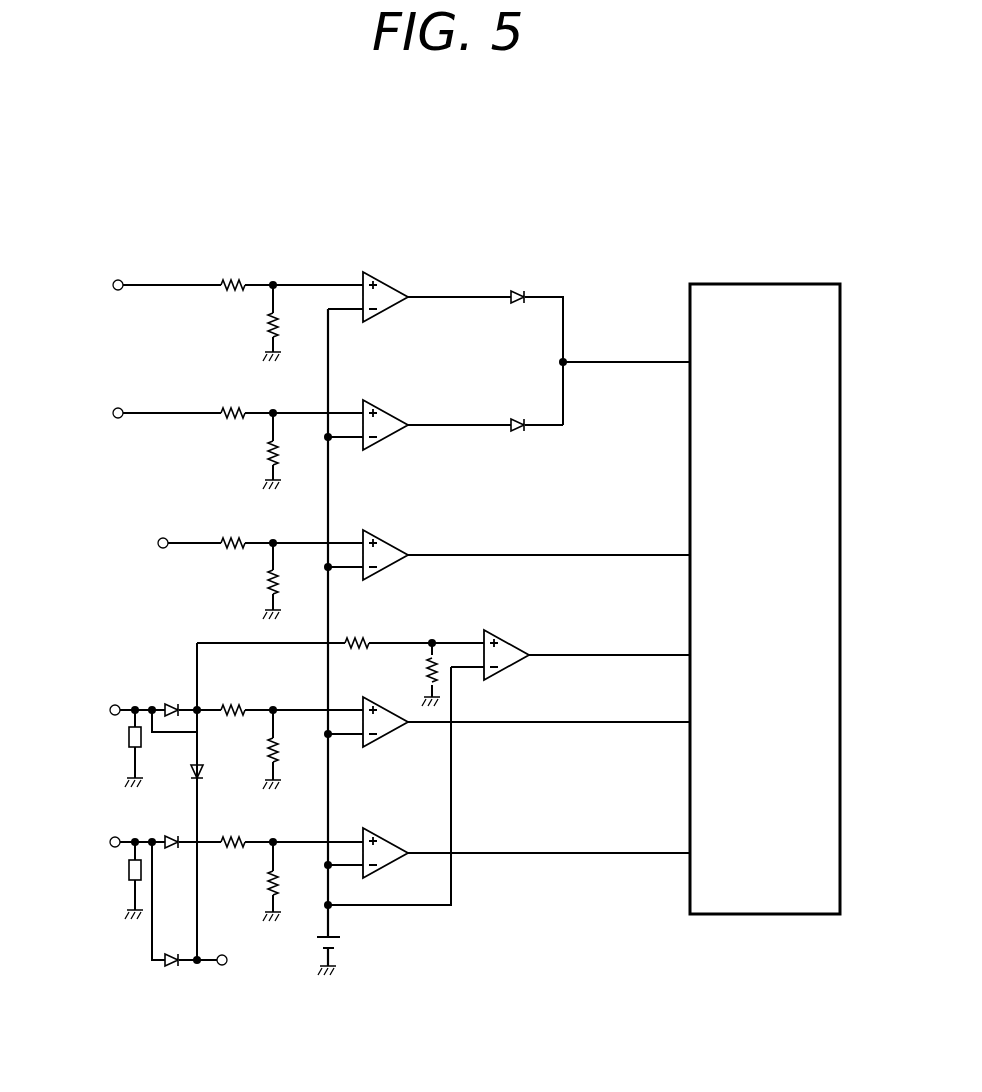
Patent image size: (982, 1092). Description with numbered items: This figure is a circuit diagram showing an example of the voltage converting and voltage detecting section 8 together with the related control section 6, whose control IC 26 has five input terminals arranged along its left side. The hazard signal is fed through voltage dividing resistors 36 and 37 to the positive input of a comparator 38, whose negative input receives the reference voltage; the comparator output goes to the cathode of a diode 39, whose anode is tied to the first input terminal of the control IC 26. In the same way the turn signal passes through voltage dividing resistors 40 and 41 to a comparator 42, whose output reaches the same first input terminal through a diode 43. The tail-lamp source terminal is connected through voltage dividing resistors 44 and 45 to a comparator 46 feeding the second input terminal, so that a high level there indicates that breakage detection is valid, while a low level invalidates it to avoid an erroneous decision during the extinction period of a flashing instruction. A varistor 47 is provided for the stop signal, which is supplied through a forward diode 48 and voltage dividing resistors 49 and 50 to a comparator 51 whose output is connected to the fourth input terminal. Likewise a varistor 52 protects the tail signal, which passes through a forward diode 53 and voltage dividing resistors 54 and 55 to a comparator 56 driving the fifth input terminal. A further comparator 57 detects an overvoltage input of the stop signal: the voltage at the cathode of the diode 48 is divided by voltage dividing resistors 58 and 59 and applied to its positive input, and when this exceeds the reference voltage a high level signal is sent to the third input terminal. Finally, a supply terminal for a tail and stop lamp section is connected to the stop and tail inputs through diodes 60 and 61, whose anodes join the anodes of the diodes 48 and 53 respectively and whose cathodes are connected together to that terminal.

The control section 6 is at (783, 181).
The voltage converting and voltage detecting section 8 is at (410, 181).
The control IC 26 is at (799, 284).
The voltage dividing resistor 36 is at (232, 276).
The voltage dividing resistor 37 is at (266, 325).
The comparator 38 is at (388, 286).
The diode 39 is at (514, 288).
The voltage dividing resistor 40 is at (232, 404).
The voltage dividing resistor 41 is at (266, 453).
The comparator 42 is at (388, 415).
The diode 43 is at (514, 418).
The voltage dividing resistor 44 is at (232, 534).
The voltage dividing resistor 45 is at (266, 582).
The comparator 46 is at (388, 543).
The varistor 47 is at (129, 752).
The forward diode 48 is at (172, 704).
The voltage dividing resistor 49 is at (232, 704).
The voltage dividing resistor 50 is at (266, 749).
The comparator 51 is at (388, 704).
The varistor 52 is at (129, 882).
The forward diode 53 is at (172, 835).
The voltage dividing resistor 54 is at (232, 835).
The voltage dividing resistor 55 is at (266, 882).
The comparator 56 is at (388, 835).
The comparator 57 is at (506, 636).
The voltage dividing resistor 58 is at (367, 638).
The voltage dividing resistor 59 is at (435, 657).
The diode 60 is at (190, 768).
The diode 61 is at (172, 953).